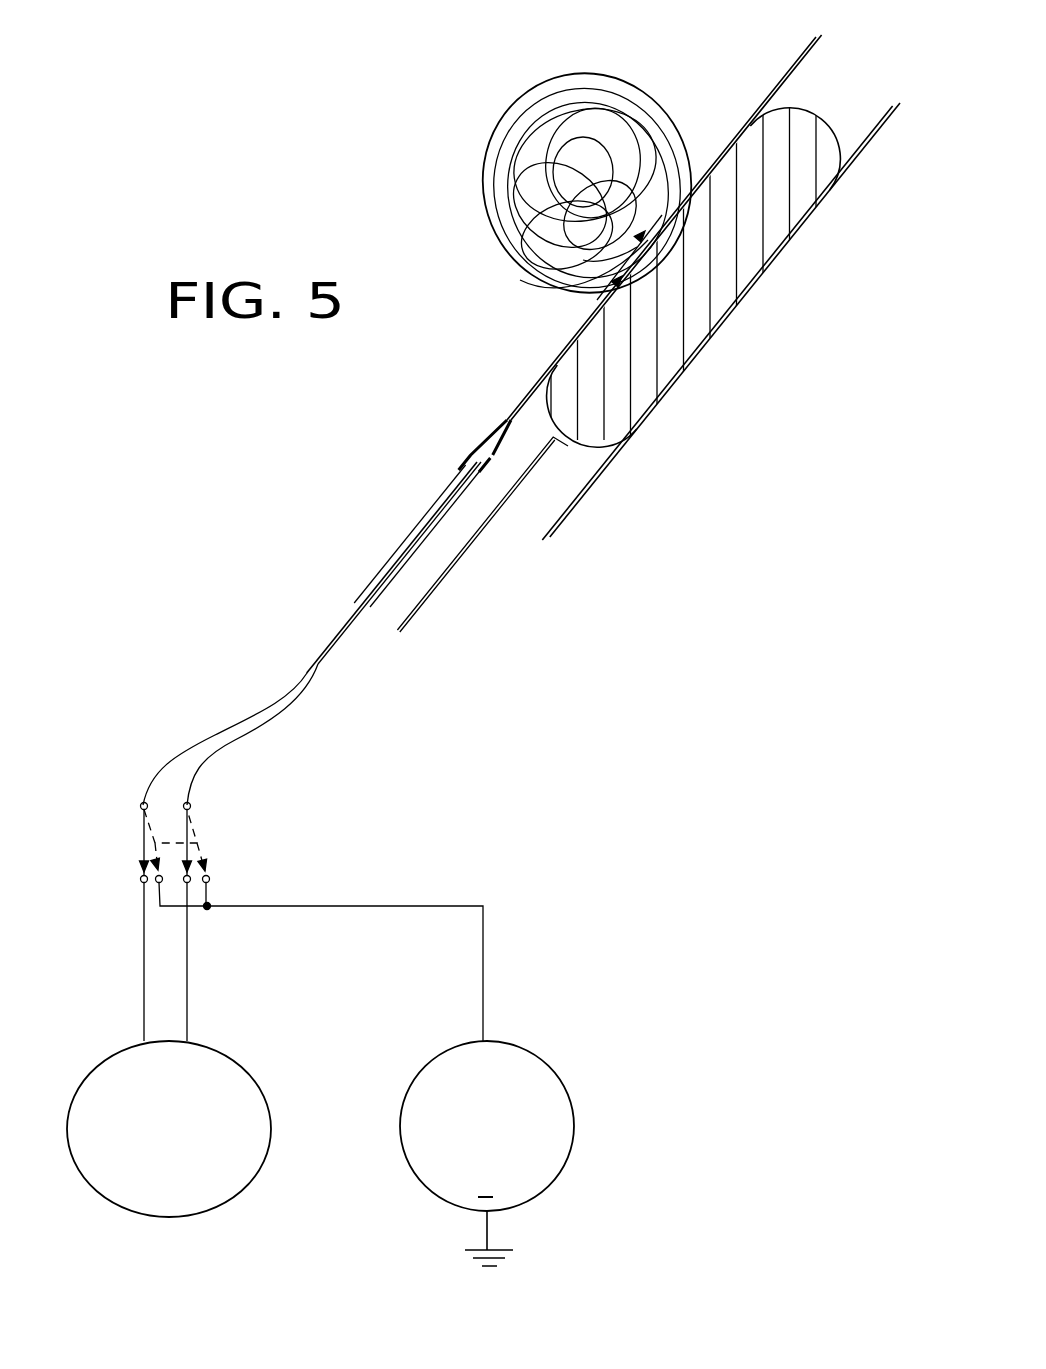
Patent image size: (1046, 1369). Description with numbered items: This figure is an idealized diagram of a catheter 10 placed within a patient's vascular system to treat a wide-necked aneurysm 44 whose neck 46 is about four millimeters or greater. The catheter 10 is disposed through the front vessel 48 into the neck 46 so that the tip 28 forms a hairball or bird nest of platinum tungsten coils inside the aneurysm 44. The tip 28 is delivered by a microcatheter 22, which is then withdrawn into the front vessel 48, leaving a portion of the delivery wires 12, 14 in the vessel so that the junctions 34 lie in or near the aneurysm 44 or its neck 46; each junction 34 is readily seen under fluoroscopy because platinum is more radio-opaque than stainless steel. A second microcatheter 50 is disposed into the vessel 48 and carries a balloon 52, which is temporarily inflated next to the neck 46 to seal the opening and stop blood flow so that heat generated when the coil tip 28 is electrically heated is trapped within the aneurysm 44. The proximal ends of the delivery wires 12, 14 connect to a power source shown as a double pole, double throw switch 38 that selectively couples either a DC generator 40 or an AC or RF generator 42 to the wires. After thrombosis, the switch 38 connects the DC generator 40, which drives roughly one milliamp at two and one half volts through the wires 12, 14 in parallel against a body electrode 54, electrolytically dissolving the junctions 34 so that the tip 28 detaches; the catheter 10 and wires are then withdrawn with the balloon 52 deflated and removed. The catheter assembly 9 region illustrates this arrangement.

The catheter 9 is at (835, 117).
The catheter 10 is at (262, 665).
The delivery wire 12 is at (232, 728).
The delivery wire 14 is at (245, 740).
The microcatheter 22 is at (387, 613).
The tip 28 is at (482, 197).
The junction 34 is at (653, 217).
The double pole, double throw switch 38 is at (128, 873).
The DC generator 40 is at (573, 1110).
The AC or RF generator 42 is at (222, 1052).
The aneurysm 44 is at (667, 127).
The neck 46 is at (673, 187).
The front vessel 48 is at (603, 480).
The second microcatheter 50 is at (485, 543).
The balloon 52 is at (693, 328).
The body electrode 54 is at (512, 1247).